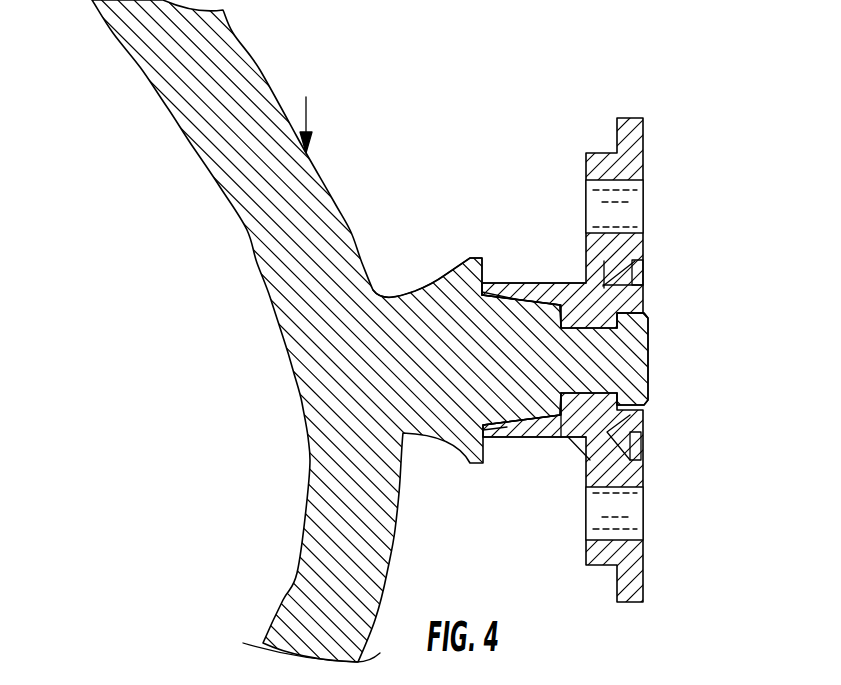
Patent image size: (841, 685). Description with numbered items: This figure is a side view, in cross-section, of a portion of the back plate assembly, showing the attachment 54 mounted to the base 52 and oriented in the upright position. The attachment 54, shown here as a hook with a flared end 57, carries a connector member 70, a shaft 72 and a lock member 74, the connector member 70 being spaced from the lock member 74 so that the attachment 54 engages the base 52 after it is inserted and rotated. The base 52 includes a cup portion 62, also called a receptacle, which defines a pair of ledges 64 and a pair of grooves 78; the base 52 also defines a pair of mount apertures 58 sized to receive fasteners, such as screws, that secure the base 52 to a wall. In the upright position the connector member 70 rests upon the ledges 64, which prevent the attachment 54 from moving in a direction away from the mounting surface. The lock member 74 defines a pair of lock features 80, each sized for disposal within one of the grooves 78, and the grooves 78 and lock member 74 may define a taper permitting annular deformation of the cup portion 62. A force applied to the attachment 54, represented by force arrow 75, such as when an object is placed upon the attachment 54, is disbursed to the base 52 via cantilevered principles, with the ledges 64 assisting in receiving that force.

The base 52 is at (628, 117).
The attachment 54 is at (277, 97).
The flared end 57 is at (445, 275).
The mount apertures 58 is at (633, 162).
The cup portion 62 is at (552, 282).
The ledges 64 is at (622, 303).
The connector member 70 is at (648, 350).
The shaft 72 is at (575, 445).
The lock member 74 is at (513, 340).
The force arrow 75 is at (306, 118).
The grooves 78 is at (495, 283).
The lock features 80 is at (513, 297).